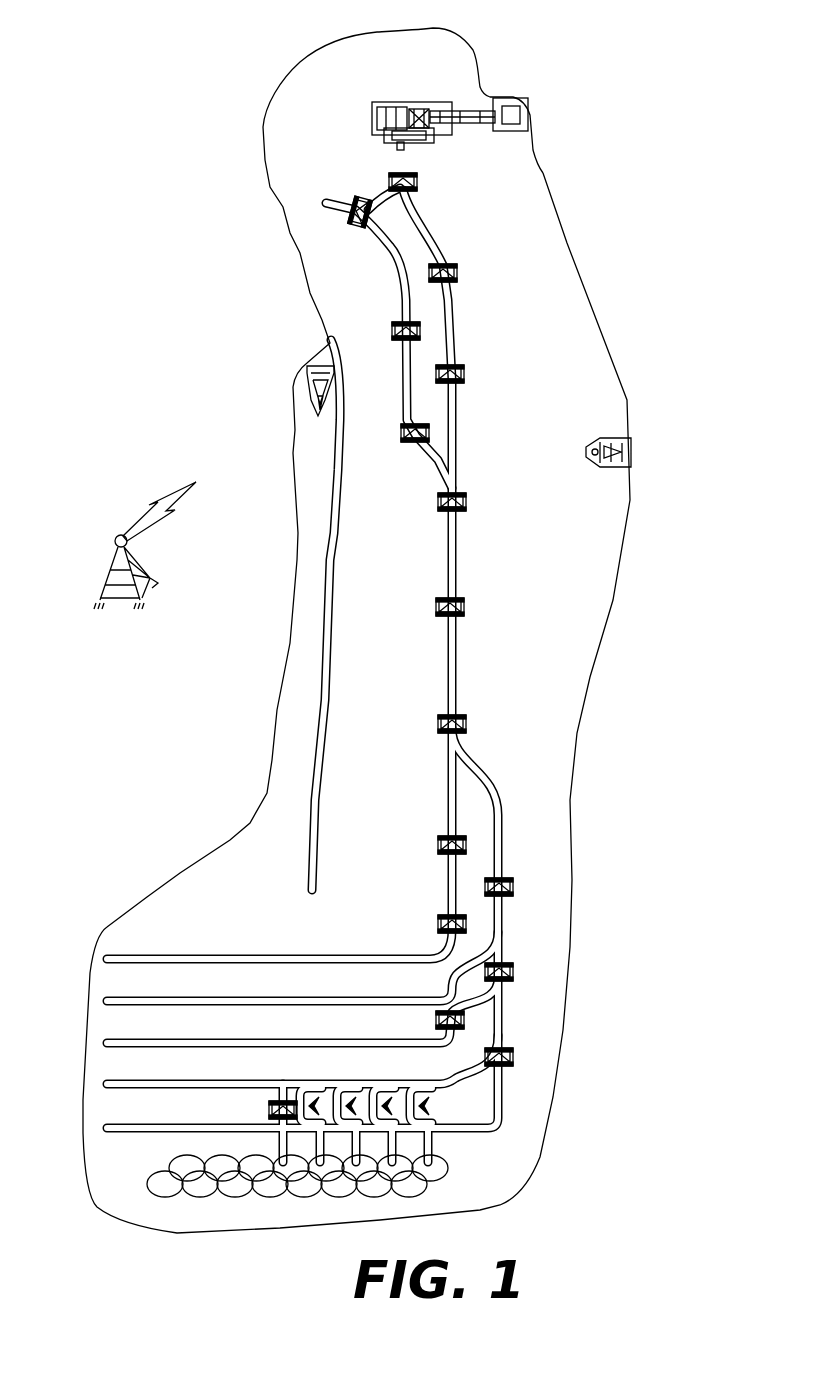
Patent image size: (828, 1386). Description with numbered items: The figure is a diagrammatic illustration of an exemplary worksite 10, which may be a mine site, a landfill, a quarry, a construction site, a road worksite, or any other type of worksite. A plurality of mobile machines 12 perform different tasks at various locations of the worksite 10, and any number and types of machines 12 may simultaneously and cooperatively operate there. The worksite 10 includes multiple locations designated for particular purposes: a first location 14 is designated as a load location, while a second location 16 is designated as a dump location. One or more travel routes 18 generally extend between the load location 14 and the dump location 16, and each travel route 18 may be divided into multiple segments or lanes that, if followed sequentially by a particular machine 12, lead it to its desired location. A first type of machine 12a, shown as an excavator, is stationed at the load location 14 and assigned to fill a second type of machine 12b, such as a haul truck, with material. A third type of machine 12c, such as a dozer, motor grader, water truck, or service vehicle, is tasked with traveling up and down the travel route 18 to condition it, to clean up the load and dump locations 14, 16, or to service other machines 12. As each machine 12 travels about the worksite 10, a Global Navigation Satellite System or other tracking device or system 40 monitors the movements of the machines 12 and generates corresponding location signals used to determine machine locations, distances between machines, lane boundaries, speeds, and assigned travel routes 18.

The worksite 10 is at (693, 995).
The mobile machines 12 is at (454, 188).
The first type of machine 12a is at (373, 98).
The second type of machine 12b is at (467, 503).
The third type of machine 12c is at (306, 363).
The first location 14 is at (330, 137).
The second location 16 is at (495, 1182).
The travel routes 18 is at (457, 657).
The tracking device or system 40 is at (116, 546).